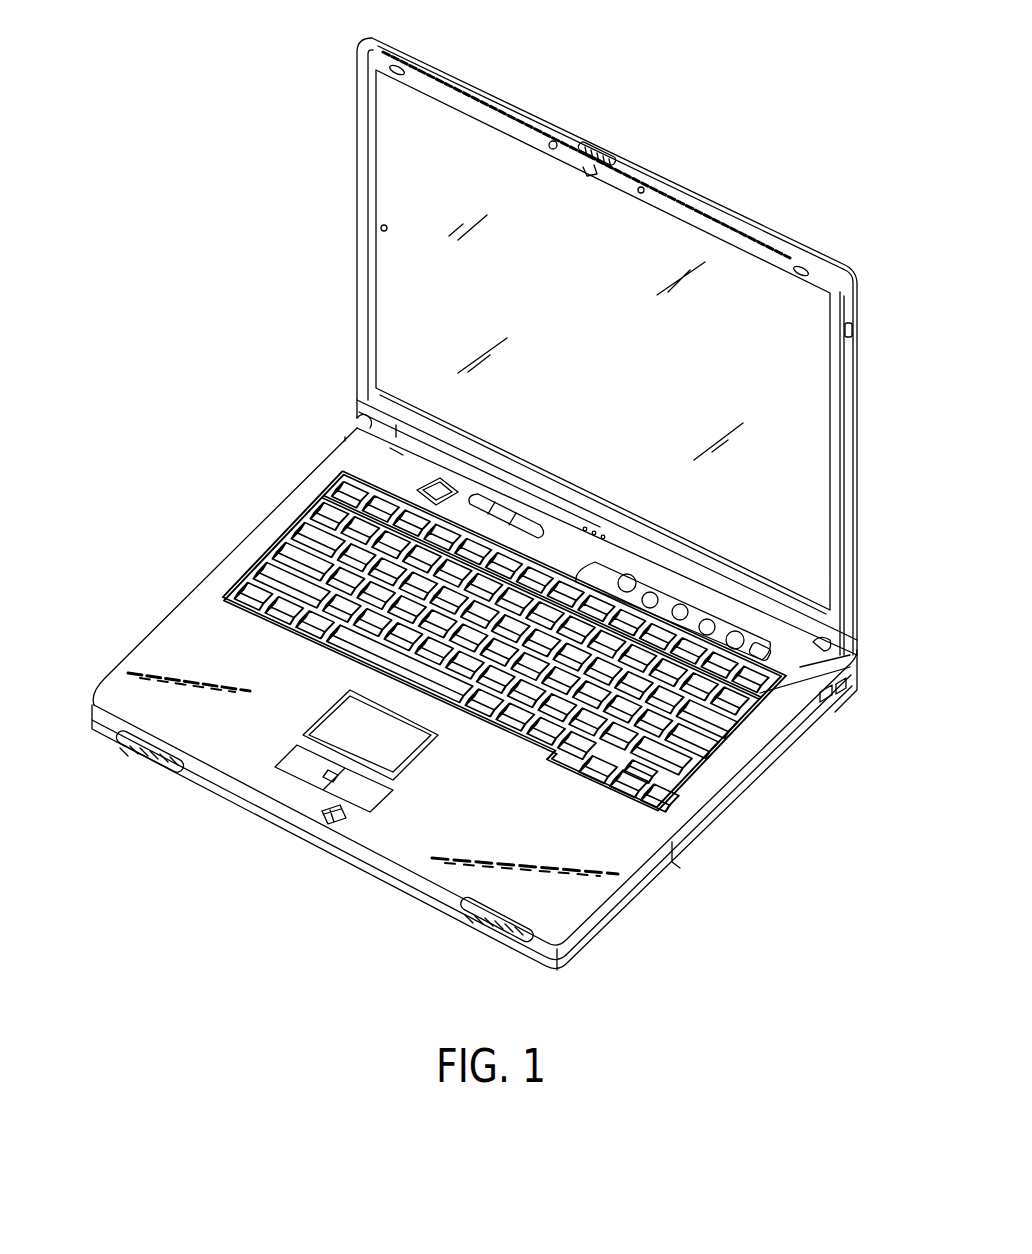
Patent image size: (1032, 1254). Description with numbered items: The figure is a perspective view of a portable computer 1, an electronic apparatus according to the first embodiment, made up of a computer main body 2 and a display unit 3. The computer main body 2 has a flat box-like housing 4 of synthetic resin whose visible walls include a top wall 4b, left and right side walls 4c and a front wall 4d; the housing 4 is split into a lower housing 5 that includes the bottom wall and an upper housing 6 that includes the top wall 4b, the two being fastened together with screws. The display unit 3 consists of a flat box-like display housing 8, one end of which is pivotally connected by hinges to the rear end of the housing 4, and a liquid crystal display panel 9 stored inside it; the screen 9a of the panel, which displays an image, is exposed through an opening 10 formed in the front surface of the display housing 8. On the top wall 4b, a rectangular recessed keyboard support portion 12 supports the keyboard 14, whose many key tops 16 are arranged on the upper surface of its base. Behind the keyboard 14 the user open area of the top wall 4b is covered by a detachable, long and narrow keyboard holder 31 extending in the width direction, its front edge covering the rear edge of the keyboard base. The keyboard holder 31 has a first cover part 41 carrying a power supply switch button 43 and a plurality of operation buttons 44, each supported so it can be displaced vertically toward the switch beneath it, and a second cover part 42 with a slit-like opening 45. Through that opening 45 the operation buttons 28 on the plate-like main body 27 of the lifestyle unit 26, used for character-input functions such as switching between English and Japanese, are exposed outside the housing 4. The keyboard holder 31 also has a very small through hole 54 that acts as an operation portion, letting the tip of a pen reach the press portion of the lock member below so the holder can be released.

The portable computer 1 is at (733, 167).
The computer main body 2 is at (103, 667).
The display unit 3 is at (345, 173).
The housing 4 is at (243, 866).
The top wall 4b is at (192, 612).
The side walls 4c is at (652, 870).
The front wall 4d is at (416, 882).
The lower housing 5 is at (218, 797).
The upper housing 6 is at (265, 806).
The display housing 8 is at (790, 240).
The liquid crystal display panel 9 is at (812, 385).
The screen 9a is at (648, 340).
The opening 10 is at (380, 230).
The keyboard support portion 12 is at (290, 537).
The keyboard 14 is at (505, 647).
The key tops 16 is at (508, 722).
The lifestyle unit 26 is at (640, 588).
The main body 27 is at (762, 650).
The operation buttons 28 is at (733, 636).
The keyboard holder 31 is at (573, 546).
The first cover part 41 is at (398, 468).
The second cover part 42 is at (808, 663).
The power supply switch button 43 is at (440, 486).
The operation buttons 44 is at (530, 528).
The opening 45 is at (680, 610).
The through hole 54 is at (352, 454).